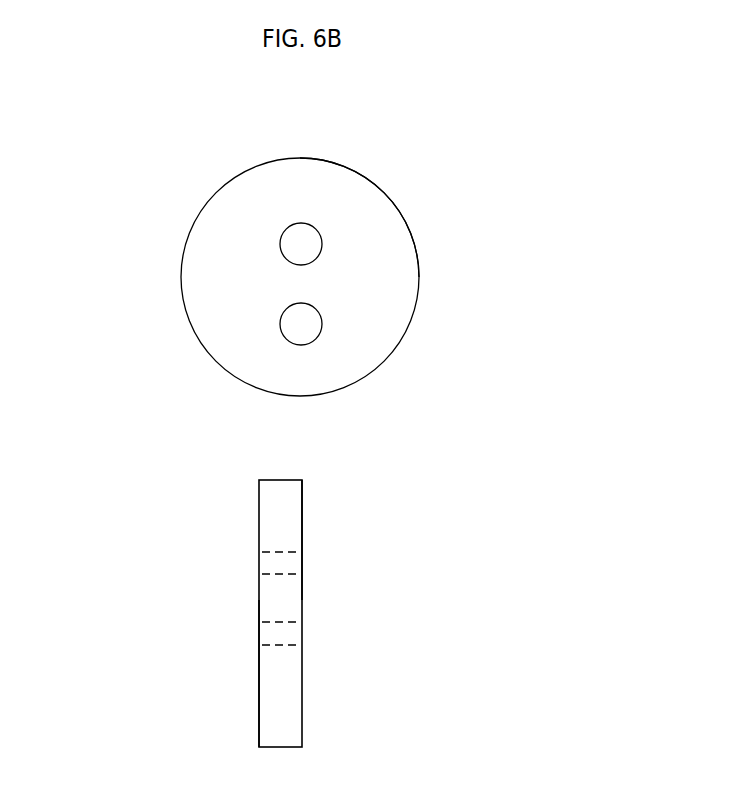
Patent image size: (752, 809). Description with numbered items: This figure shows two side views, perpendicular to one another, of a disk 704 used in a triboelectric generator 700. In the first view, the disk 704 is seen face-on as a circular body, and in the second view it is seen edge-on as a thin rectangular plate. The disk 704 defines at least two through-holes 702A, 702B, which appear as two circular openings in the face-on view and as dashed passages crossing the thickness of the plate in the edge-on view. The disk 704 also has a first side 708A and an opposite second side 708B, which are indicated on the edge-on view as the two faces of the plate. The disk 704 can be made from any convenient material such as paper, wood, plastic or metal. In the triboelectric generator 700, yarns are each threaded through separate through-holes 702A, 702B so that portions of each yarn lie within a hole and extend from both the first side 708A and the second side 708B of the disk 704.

The triboelectric generator 700 is at (323, 113).
The disk 704 is at (307, 461).
The through-hole 702A is at (324, 237).
The through-hole 702B is at (490, 720).
The first side 708A is at (652, 291).
The second side 708B is at (258, 705).